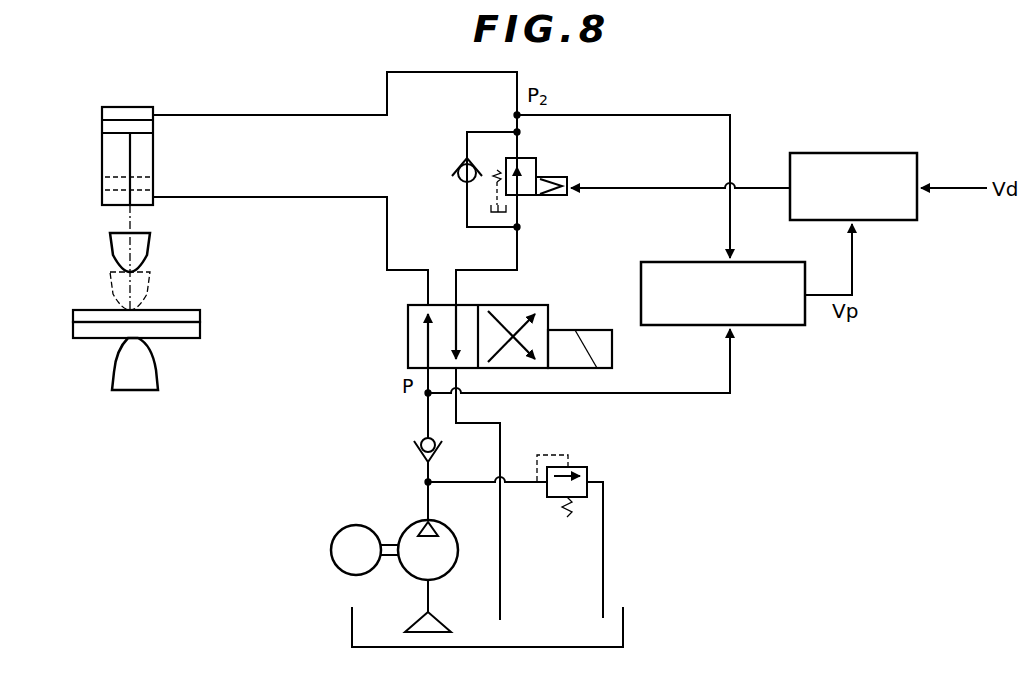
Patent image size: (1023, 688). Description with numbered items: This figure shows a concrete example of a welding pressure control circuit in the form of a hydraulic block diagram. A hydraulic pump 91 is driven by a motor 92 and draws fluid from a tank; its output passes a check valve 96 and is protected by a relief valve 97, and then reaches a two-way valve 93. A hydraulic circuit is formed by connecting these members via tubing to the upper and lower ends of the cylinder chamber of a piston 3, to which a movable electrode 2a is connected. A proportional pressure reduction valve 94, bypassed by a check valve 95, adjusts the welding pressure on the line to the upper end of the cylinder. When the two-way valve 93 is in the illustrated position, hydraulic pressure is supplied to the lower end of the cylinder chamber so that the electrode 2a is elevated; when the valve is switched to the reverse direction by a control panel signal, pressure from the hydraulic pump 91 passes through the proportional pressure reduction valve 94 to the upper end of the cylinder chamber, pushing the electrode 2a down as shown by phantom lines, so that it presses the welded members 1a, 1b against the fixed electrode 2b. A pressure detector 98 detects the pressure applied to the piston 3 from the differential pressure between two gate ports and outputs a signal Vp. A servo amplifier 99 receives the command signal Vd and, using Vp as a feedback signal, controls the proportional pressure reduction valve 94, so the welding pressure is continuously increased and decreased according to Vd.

The piston 3 is at (136, 128).
The movable electrode 2a is at (150, 255).
The fixed electrode 2b is at (160, 375).
The welded member 1a is at (200, 310).
The welded member 1b is at (192, 340).
The check valve 95 is at (452, 166).
The proportional pressure reduction valve 94 is at (538, 166).
The two-way valve 93 is at (408, 346).
The check valve 96 is at (413, 452).
The motor 92 is at (357, 525).
The hydraulic pump 91 is at (449, 527).
The relief valve 97 is at (587, 467).
The pressure detector 98 is at (641, 290).
The servo amplifier 99 is at (887, 153).